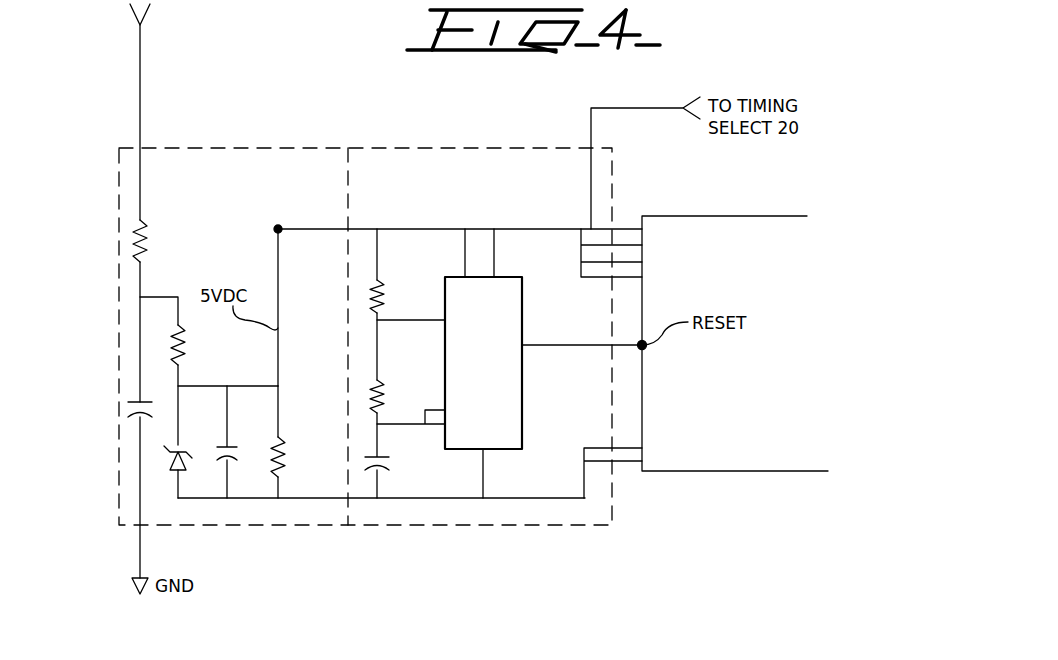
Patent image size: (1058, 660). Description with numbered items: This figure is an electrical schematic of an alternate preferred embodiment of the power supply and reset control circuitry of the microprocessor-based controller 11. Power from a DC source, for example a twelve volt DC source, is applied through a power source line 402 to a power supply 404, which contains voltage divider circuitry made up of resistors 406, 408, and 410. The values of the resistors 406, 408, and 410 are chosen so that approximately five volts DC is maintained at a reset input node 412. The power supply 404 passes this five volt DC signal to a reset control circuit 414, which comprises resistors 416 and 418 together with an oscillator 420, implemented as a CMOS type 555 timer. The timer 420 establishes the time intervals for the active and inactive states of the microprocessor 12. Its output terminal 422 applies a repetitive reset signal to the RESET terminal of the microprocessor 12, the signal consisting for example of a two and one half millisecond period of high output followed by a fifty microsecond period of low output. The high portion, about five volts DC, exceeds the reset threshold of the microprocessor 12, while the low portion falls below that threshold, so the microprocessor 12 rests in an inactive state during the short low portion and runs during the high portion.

The controller 11 is at (283, 92).
The microprocessor 12 is at (692, 471).
The power source line 402 is at (140, 92).
The power supply 404 is at (119, 160).
The resistor 406 is at (147, 242).
The resistor 408 is at (183, 342).
The resistor 410 is at (284, 458).
The reset input node 412 is at (278, 229).
The reset control circuit 414 is at (365, 148).
The resistor 416 is at (384, 297).
The resistor 418 is at (384, 398).
The oscillator 420 is at (522, 289).
The output terminal 422 is at (562, 347).
The 555 timer 555 is at (483, 363).